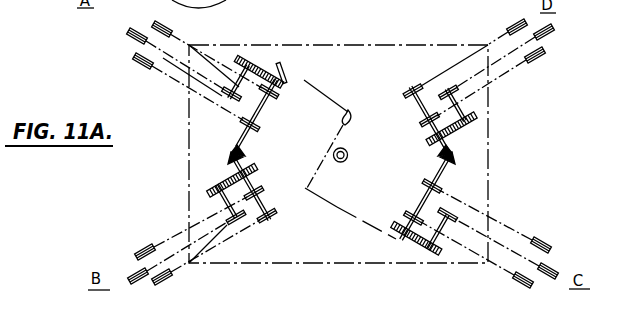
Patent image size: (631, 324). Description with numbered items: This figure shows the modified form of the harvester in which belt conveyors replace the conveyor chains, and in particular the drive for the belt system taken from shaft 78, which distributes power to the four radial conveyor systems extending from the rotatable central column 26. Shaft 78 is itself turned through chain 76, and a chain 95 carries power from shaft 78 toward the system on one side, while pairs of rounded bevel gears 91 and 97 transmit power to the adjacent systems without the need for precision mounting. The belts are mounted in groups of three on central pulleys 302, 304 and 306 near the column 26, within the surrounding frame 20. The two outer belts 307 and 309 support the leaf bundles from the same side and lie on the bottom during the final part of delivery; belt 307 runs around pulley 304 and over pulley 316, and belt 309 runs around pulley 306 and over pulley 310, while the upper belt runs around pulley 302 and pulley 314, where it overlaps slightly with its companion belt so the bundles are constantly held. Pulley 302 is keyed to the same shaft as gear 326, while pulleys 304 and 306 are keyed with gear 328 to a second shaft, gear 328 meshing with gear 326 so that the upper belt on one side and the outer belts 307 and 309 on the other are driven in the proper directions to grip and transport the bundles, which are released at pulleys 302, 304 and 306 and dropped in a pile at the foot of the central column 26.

The frame plate 20 is at (347, 248).
The central column 26 is at (336, 149).
The chain 76 is at (307, 81).
The shaft 78 is at (348, 112).
The rounded bevel gears 91 is at (227, 150).
The chain 95 is at (366, 222).
The rounded bevel gears 97 is at (455, 156).
The central pulley 302 is at (225, 102).
The central pulley 304 is at (281, 97).
The central pulley 306 is at (258, 130).
The outer belt 307 is at (207, 56).
The outer belt 309 is at (182, 85).
The pulley 310 is at (143, 65).
The pulley 314 is at (126, 35).
The pulley 316 is at (156, 20).
The gear 326 is at (262, 57).
The gear 328 is at (284, 70).